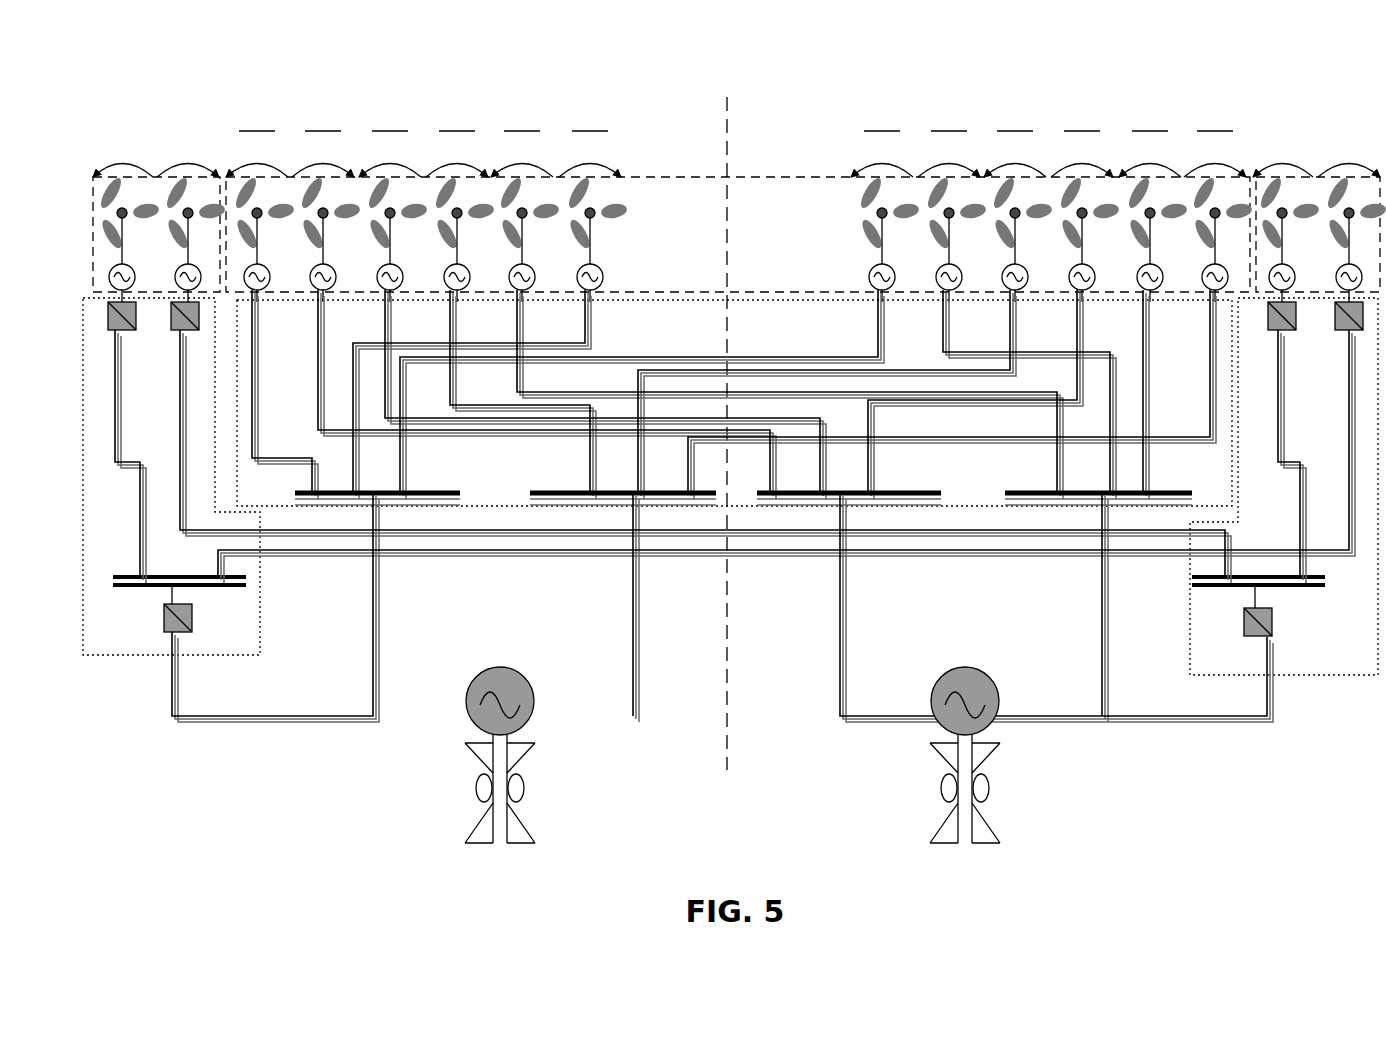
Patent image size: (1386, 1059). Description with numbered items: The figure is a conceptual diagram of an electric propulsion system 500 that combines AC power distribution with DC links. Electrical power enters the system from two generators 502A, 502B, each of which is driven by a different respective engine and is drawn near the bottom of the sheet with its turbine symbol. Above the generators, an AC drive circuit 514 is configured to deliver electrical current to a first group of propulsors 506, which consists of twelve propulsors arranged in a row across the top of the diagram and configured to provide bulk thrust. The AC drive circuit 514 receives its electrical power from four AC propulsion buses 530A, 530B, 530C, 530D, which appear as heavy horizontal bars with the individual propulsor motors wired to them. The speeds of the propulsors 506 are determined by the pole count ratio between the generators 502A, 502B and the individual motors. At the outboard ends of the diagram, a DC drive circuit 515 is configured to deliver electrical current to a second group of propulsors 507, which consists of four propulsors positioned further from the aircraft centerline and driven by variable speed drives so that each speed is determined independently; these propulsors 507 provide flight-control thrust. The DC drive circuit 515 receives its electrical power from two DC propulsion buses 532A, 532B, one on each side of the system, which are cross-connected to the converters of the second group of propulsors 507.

The electric propulsion system 500 is at (193, 50).
The first group of propulsors 506 is at (739, 208).
The second group of propulsors 507 is at (739, 237).
The AC drive circuit 514 is at (734, 398).
The DC drive circuit 515 is at (730, 510).
The AC propulsion bus 530A is at (425, 490).
The AC propulsion bus 530B is at (622, 490).
The AC propulsion bus 530C is at (885, 490).
The AC propulsion bus 530D is at (1095, 490).
The DC propulsion bus 532A is at (190, 572).
The DC propulsion bus 532B is at (1245, 572).
The generator 502A is at (490, 672).
The generator 502B is at (960, 672).